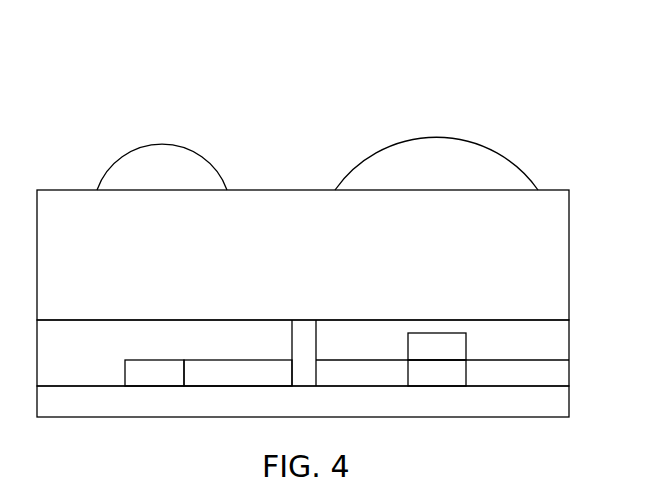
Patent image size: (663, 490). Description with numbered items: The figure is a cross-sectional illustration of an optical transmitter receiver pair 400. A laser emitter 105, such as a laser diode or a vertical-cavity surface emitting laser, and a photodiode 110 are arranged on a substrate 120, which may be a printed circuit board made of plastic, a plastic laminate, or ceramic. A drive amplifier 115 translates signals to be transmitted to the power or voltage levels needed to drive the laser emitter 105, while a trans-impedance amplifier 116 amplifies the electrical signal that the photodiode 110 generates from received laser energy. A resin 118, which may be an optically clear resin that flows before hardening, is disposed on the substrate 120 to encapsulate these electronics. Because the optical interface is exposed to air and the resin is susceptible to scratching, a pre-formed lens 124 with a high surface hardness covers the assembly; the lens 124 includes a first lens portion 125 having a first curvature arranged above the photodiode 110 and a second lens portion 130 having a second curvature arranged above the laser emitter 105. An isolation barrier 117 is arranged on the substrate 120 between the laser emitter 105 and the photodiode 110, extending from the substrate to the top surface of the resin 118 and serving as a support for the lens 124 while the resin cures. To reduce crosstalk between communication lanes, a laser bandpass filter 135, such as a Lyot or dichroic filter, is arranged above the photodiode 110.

The optical transmitter receiver pair 400 is at (510, 37).
The lens 124 is at (569, 230).
The second lens portion 130 is at (190, 148).
The first lens portion 125 is at (492, 148).
The resin 118 is at (569, 345).
The substrate 120 is at (569, 398).
The laser emitter 105 is at (125, 368).
The drive amplifier 115 is at (202, 358).
The isolation barrier 117 is at (303, 386).
The trans-impedance amplifier 116 is at (338, 358).
The laser bandpass filter 135 is at (467, 343).
The photodiode 110 is at (467, 370).